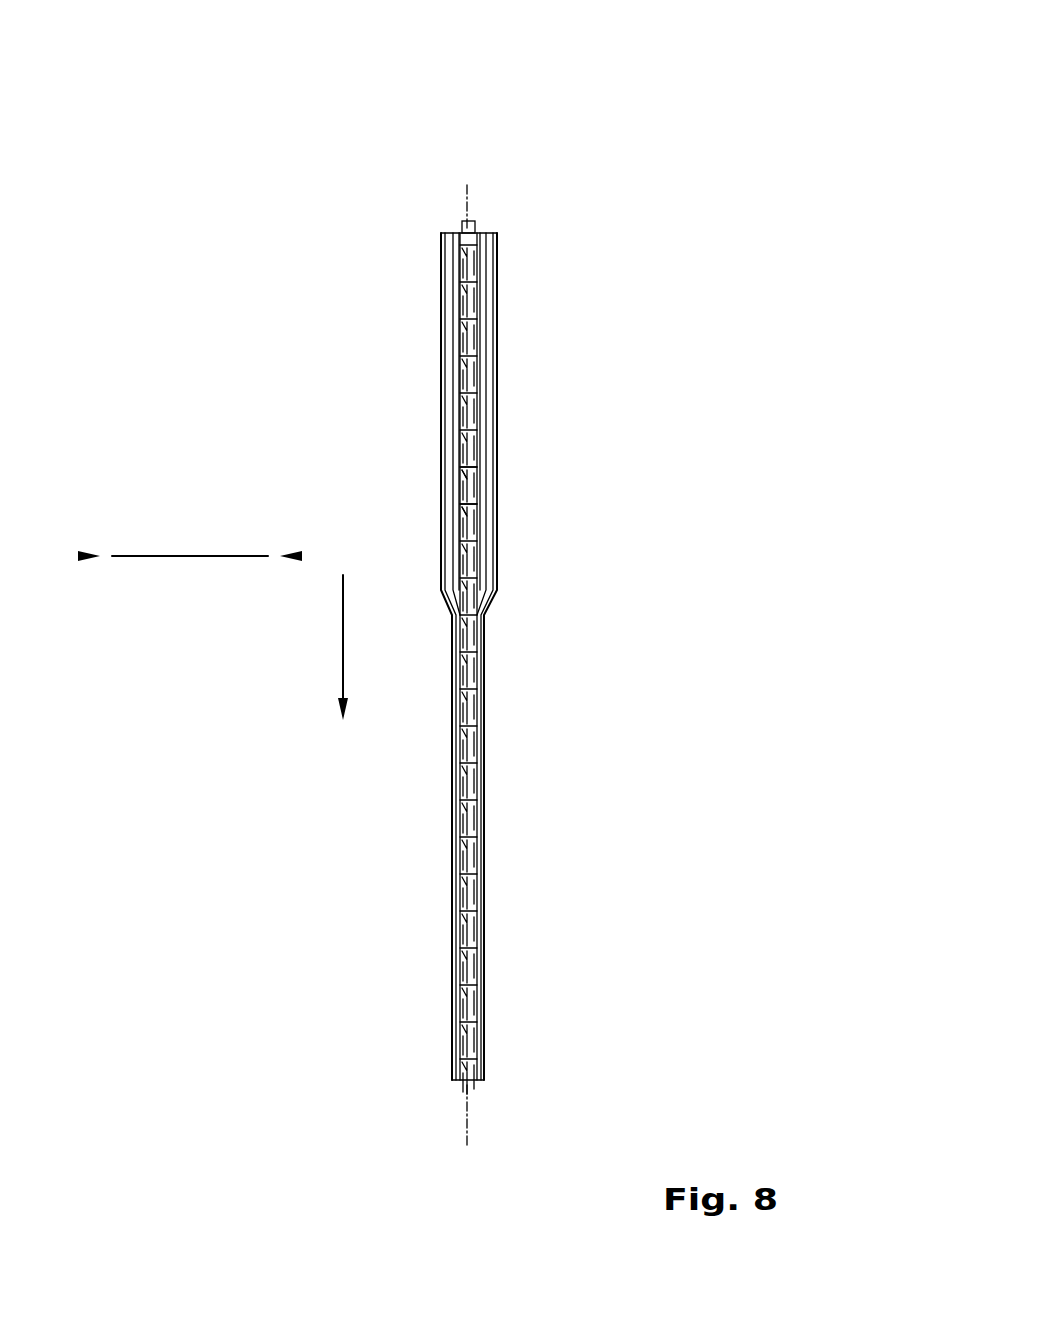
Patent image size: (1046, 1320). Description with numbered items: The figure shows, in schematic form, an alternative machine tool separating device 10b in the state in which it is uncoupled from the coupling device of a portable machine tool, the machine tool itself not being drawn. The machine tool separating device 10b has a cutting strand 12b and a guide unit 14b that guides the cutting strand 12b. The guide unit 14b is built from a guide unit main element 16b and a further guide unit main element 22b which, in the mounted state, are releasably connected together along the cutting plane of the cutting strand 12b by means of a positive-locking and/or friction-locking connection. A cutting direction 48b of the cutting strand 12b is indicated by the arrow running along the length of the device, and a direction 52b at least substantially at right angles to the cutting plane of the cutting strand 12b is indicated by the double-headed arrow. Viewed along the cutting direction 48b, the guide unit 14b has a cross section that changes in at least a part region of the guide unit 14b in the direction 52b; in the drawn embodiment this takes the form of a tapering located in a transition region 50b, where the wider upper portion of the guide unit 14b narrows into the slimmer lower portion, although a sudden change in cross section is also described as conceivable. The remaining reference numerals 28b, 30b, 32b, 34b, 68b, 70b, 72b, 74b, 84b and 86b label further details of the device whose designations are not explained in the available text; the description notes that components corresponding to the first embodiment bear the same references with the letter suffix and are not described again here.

The machine tool separating device 10b is at (695, 78).
The cutting strand 12b is at (460, 262).
The guide unit 14b is at (497, 241).
The guide unit main element 16b is at (497, 283).
The further guide unit main element 22b is at (441, 305).
The working end 28b is at (410, 1122).
The coupling end 30b is at (548, 163).
The engagement element 32b is at (467, 483).
The engagement element 34b is at (470, 511).
The cutting direction 48b is at (343, 652).
The transition region 50b is at (548, 660).
The direction 52b is at (186, 557).
The clamping sleeve 68b is at (497, 382).
The inner wall 70b is at (430, 418).
The inner wall 72b is at (497, 314).
The recess 74b is at (441, 348).
The spring element 84b is at (461, 463).
The spring element 86b is at (474, 518).